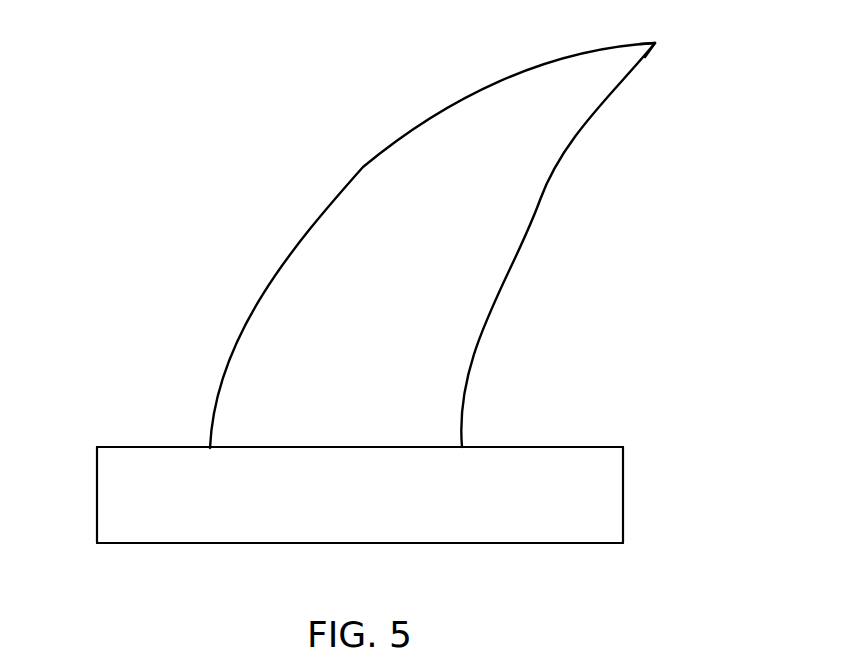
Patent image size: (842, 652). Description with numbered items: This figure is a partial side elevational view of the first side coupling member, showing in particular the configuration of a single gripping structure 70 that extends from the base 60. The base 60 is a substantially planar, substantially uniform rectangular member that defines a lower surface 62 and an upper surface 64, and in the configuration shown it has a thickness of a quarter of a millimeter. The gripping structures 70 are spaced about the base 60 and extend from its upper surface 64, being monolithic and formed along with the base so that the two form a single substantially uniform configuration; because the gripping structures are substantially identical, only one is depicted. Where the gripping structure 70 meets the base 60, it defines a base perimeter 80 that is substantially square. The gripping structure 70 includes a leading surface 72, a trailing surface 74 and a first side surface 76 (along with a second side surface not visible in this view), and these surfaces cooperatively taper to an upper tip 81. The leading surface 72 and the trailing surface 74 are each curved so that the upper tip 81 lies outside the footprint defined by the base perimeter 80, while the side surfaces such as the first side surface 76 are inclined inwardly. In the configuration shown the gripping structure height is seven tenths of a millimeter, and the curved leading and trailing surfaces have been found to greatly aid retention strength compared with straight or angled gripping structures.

The base 60 is at (87, 434).
The lower surface 62 is at (360, 545).
The upper surface 64 is at (543, 447).
The gripping structure 70 is at (504, 225).
The leading surface 72 is at (363, 167).
The trailing surface 74 is at (538, 205).
The first side surface 76 is at (428, 274).
The base perimeter 80 is at (273, 447).
The upper tip 81 is at (656, 43).